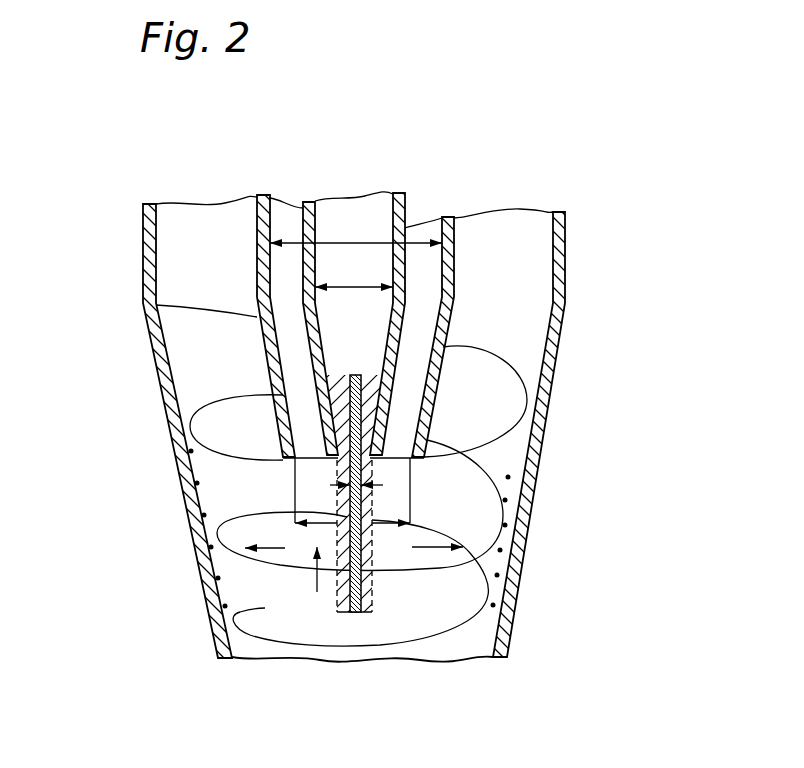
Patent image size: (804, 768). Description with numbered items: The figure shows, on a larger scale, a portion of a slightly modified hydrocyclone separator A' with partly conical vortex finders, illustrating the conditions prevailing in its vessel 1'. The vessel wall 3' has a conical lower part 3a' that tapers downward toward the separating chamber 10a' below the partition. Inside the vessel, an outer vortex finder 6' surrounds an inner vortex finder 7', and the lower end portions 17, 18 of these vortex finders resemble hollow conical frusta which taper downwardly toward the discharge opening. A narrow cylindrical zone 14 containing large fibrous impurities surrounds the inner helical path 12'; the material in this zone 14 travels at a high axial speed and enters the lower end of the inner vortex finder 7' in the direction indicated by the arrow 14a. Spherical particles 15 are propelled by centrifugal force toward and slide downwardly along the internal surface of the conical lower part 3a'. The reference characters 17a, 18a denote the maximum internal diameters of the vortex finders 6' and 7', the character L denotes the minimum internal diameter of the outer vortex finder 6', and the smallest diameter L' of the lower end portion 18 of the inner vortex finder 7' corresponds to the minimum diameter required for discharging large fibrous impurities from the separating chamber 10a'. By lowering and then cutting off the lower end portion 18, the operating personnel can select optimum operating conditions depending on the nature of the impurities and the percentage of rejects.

The vessel 1' is at (422, 273).
The vessel wall 3' is at (371, 431).
The conical lower part 3a' is at (527, 634).
The outer vortex finder 6' is at (391, 326).
The inner vortex finder 7' is at (412, 299).
The separating chamber 10a' is at (357, 674).
The inner helical path 12' is at (384, 493).
The narrow cylindrical zone 14 is at (372, 527).
The arrow 14a is at (315, 577).
The spherical particles 15 is at (190, 488).
The lower end portion of outer vortex finder 17 is at (428, 418).
The maximum internal diameter of outer vortex finder 17a is at (356, 234).
The lower end portion of inner vortex finder 18 is at (387, 431).
The maximum internal diameter of inner vortex finder 18a is at (354, 278).
The minimum internal diameter of outer vortex finder L is at (352, 495).
The smallest diameter of lower end portion of inner vortex finder L' is at (362, 479).
The hydrocyclone separator A' is at (74, 506).